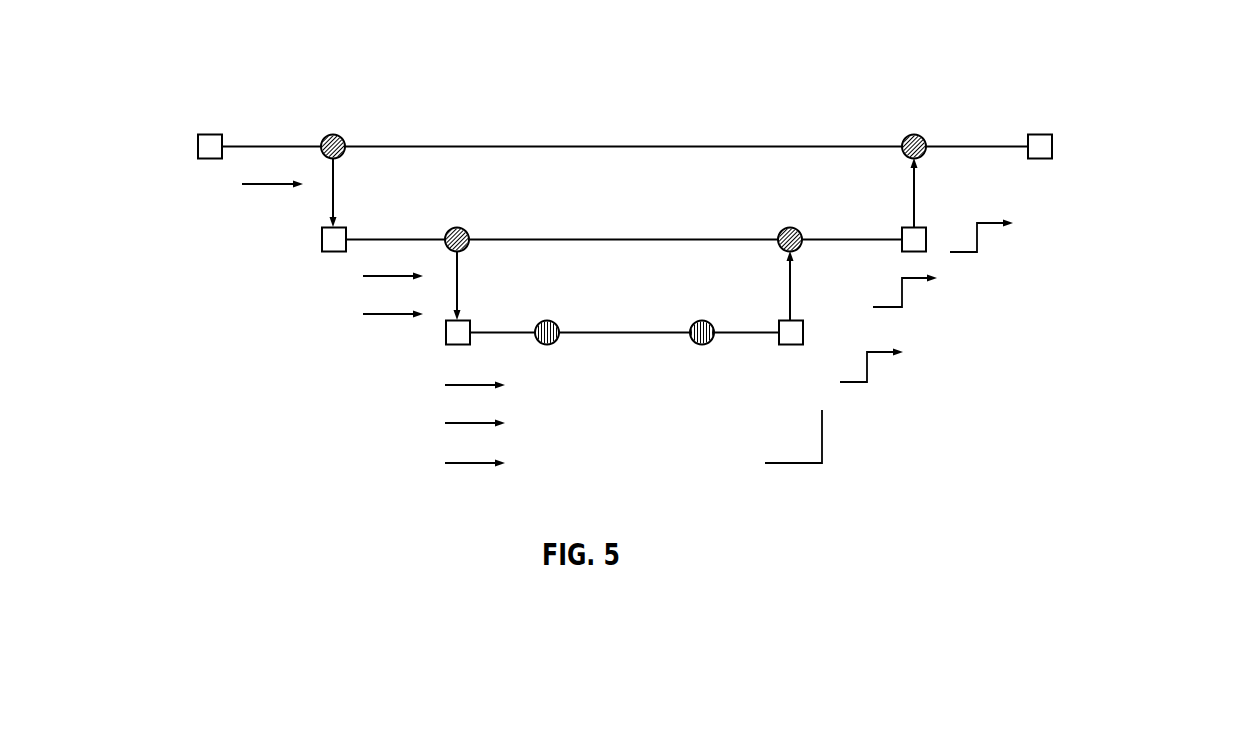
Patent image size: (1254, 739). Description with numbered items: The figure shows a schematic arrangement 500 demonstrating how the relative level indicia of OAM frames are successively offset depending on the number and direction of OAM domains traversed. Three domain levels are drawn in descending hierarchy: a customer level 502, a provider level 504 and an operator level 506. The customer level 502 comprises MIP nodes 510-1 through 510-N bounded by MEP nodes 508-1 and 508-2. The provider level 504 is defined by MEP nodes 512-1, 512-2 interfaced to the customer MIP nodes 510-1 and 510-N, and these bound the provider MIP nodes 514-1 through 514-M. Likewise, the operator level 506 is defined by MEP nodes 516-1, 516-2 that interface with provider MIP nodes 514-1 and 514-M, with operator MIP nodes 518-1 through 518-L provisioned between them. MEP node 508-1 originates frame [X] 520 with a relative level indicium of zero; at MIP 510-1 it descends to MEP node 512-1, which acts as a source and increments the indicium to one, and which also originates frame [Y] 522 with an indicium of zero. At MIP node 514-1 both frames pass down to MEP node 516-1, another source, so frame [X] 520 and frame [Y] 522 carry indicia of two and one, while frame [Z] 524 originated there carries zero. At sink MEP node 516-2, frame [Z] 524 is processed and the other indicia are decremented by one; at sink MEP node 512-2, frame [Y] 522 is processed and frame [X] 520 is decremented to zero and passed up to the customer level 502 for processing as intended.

The schematic arrangement 500 is at (1103, 62).
The customer level 502 is at (163, 172).
The provider level 504 is at (163, 266).
The operator level 506 is at (163, 360).
The customer-level MEP node 508-1 is at (245, 114).
The customer-level MEP node 508-2 is at (1003, 117).
The customer MIP node 510-1 is at (375, 132).
The customer MIP node 510-N is at (870, 132).
The provider MEP node 512-1 is at (379, 227).
The provider MEP node 512-2 is at (865, 227).
The provider MIP node 514-1 is at (503, 227).
The provider MIP node 514-M is at (739, 227).
The operator MEP node 516-1 is at (504, 314).
The operator MEP node 516-2 is at (742, 349).
The operator MIP node 518-1 is at (592, 321).
The operator MIP node 518-L is at (653, 349).
The frame [X] 520 is at (619, 287).
The frame [Y] 522 is at (622, 372).
The frame [Z] 524 is at (606, 454).